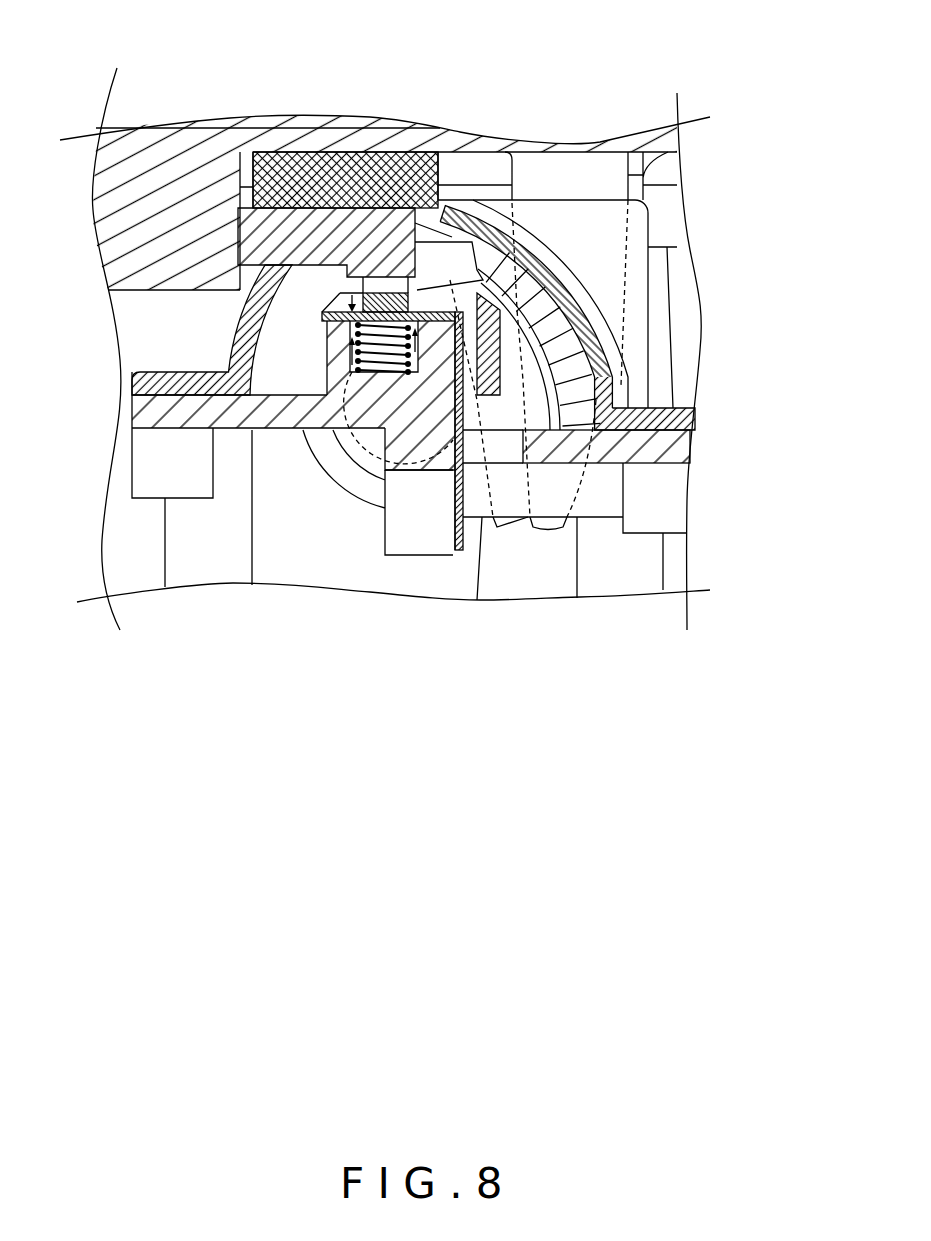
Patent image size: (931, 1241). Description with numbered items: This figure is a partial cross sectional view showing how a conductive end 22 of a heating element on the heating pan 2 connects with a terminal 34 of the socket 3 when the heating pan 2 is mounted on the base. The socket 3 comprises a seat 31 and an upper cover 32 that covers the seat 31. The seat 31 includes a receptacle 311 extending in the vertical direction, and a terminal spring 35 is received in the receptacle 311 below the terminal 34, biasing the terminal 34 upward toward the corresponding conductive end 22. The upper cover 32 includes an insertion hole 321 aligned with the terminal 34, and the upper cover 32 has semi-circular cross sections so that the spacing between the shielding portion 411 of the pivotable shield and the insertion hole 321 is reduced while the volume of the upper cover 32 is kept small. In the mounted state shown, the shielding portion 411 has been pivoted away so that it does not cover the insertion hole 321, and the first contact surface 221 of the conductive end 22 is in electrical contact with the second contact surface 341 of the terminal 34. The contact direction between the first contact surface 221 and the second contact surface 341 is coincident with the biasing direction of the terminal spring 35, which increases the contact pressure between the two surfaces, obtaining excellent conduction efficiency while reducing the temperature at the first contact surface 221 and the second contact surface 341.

The heating pan 2 is at (330, 135).
The conductive end 22 is at (261, 248).
The first contact surface 221 is at (395, 273).
The socket 3 is at (530, 199).
The insertion hole 321 is at (449, 212).
The second contact surface 341 is at (395, 292).
The terminal 34 is at (322, 316).
The terminal spring 35 is at (410, 337).
The seat 31 is at (407, 460).
The receptacle 311 is at (347, 367).
The shielding portion 411 is at (613, 378).
The upper cover 32 is at (695, 418).